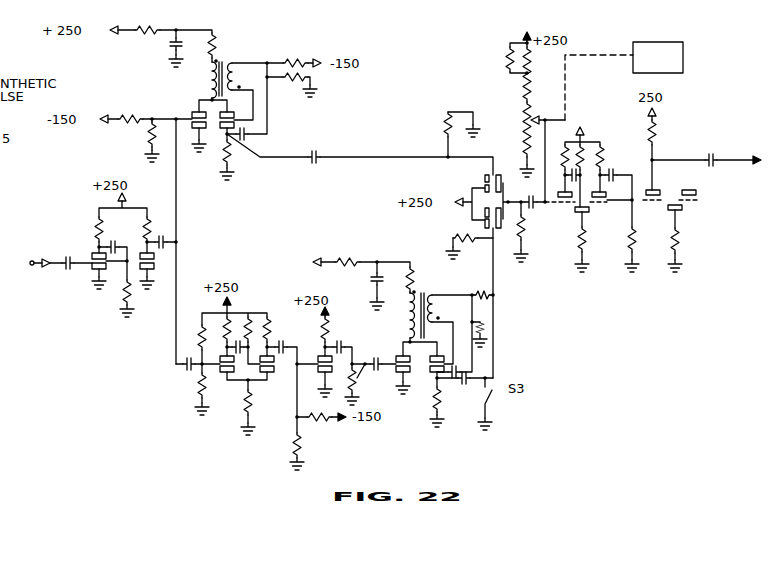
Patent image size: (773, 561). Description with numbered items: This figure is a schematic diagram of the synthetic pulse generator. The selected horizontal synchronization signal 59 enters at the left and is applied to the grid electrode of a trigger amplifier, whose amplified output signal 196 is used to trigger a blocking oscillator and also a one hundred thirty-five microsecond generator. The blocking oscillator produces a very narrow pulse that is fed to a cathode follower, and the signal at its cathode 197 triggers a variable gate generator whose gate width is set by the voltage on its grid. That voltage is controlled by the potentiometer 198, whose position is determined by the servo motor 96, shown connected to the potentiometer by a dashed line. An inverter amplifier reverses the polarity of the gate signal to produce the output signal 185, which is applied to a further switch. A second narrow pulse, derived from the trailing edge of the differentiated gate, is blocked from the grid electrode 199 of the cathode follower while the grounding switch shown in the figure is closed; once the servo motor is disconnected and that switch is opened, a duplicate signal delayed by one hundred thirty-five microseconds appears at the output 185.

The trigger amplifier output signal 196 is at (177, 212).
The selected horizontal synchronization signal 59 is at (61, 275).
The potentiometer 198 is at (530, 118).
The cathode 197 is at (527, 206).
The grid electrode 199 is at (495, 302).
The servo motor 96 is at (683, 67).
The output signal 185 is at (751, 161).